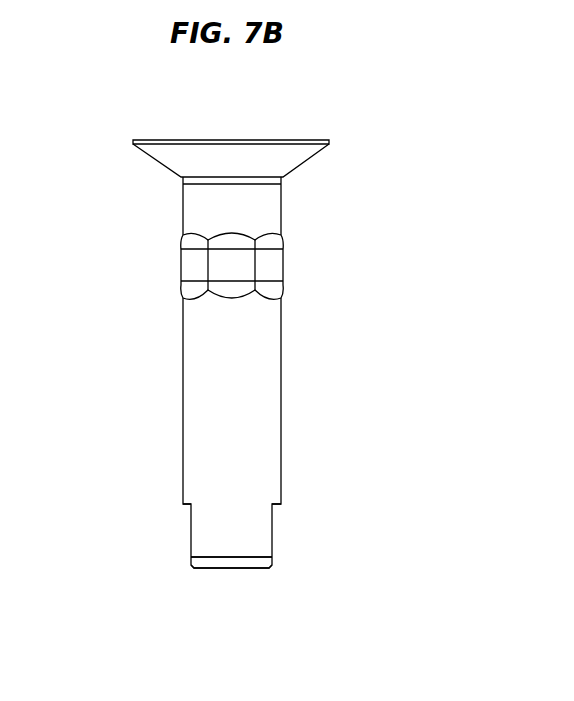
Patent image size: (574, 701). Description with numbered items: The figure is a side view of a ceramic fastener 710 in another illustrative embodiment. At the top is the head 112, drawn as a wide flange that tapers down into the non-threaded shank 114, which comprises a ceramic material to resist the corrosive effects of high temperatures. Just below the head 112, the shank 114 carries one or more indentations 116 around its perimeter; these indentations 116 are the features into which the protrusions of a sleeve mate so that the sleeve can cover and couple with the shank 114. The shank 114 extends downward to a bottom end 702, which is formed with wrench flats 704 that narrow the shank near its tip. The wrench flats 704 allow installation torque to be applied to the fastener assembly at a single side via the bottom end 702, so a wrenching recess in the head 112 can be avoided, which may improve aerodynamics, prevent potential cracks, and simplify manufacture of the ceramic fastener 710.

The ceramic fastener 710 is at (282, 355).
The head 112 is at (163, 140).
The non-threaded shank 114 is at (258, 212).
The indentations 116 is at (268, 263).
The wrench flats 704 is at (190, 527).
The bottom end 702 is at (237, 586).